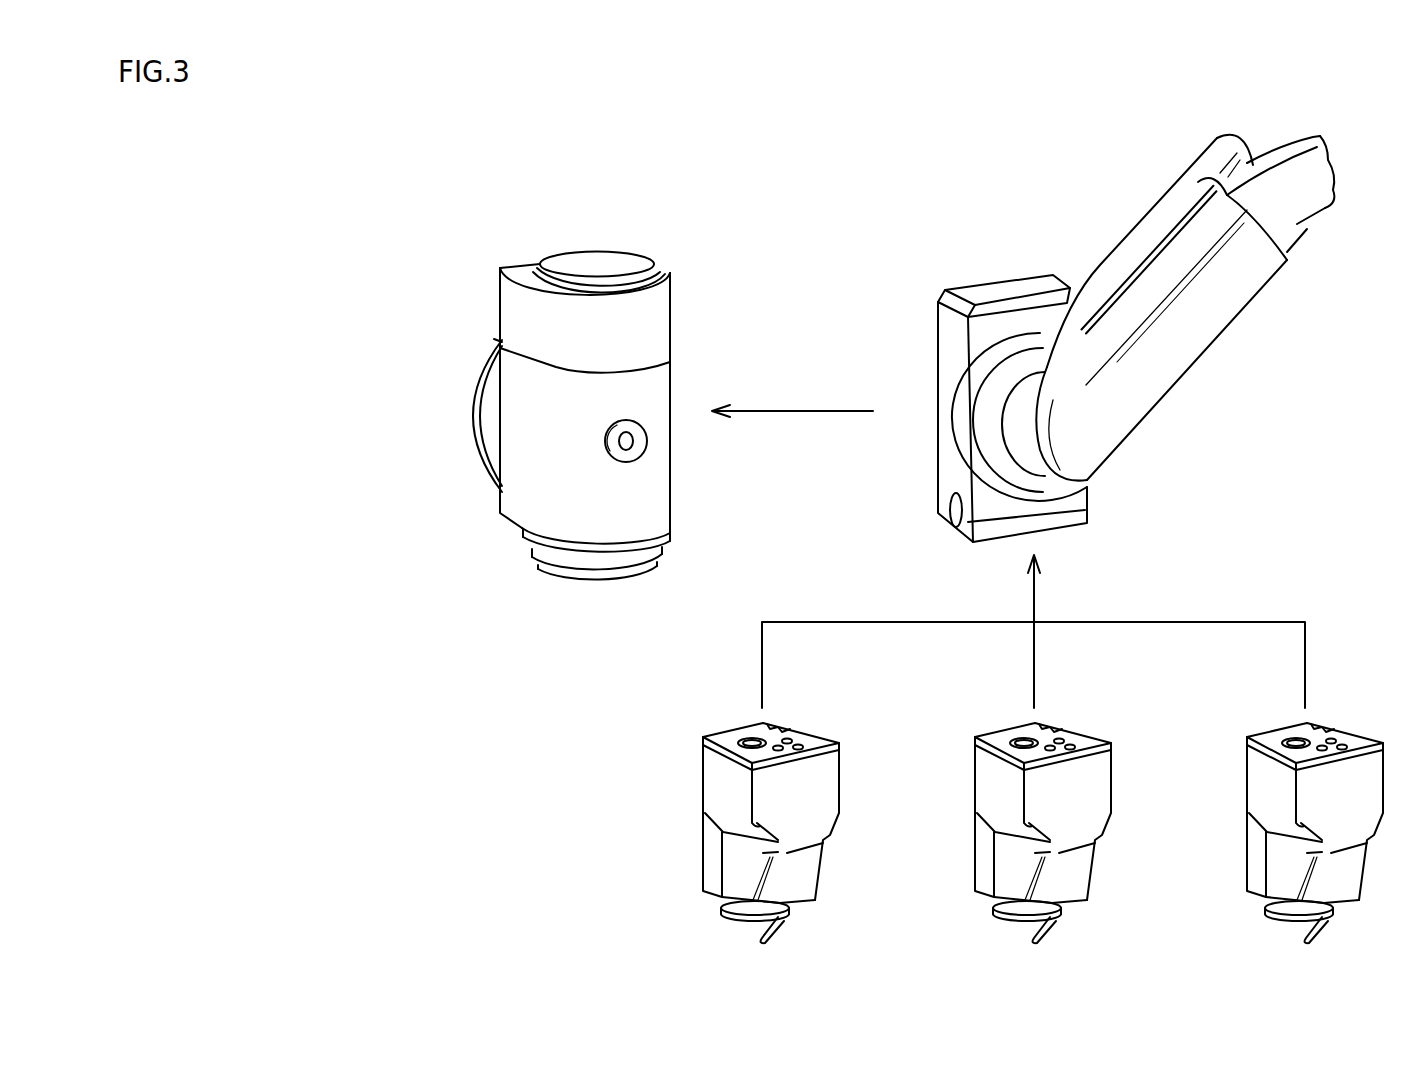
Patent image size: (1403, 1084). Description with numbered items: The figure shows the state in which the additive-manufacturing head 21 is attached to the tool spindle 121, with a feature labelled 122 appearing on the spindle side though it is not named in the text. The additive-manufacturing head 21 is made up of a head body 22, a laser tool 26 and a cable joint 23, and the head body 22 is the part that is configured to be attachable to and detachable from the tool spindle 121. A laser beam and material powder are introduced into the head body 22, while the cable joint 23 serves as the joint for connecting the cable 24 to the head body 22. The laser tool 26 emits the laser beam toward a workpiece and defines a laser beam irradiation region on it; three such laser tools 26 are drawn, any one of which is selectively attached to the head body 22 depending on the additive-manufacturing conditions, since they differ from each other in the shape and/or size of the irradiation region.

The tool spindle 121 is at (517, 247).
The lens portion 122 is at (532, 440).
The additive-manufacturing head 21 is at (953, 263).
The head body 22 is at (1082, 507).
The cable joint 23 is at (1138, 242).
The cable 24 is at (1287, 157).
The laser tool 26 is at (694, 790).